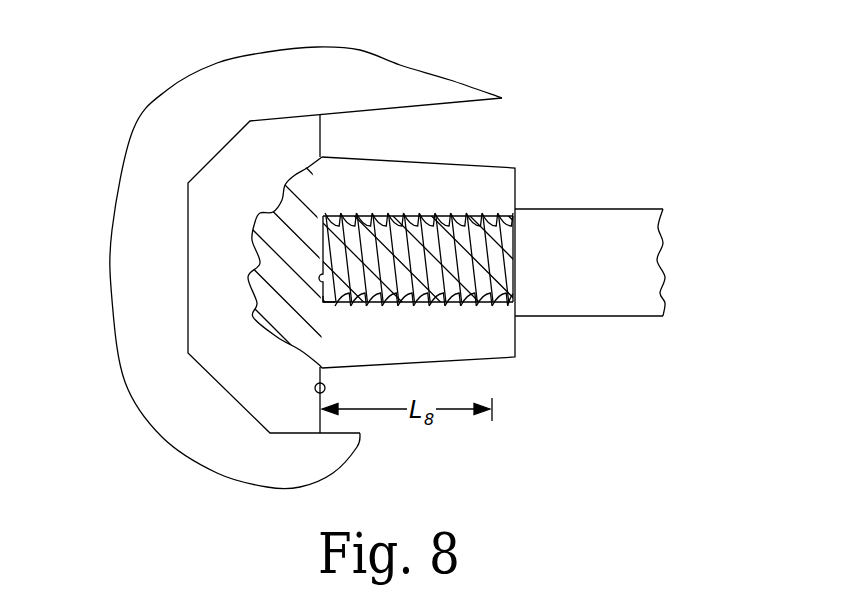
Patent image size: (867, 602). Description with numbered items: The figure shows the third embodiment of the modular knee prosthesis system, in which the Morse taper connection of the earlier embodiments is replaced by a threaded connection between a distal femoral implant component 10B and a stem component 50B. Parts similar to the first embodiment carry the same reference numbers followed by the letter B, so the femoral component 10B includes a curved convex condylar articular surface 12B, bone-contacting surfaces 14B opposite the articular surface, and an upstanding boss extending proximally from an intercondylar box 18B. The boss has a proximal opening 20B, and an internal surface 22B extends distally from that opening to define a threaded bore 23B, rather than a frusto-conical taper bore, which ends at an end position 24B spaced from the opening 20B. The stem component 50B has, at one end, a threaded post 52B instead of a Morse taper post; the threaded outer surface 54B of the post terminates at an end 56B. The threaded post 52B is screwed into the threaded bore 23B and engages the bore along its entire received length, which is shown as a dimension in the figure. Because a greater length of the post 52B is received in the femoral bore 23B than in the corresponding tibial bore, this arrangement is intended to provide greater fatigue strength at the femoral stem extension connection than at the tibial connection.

The distal femoral implant component 10B is at (291, 265).
The distal curved convex condylar articular surface 12B is at (130, 398).
The bone-contacting surfaces 14B is at (188, 215).
The intercondylar box 18B is at (315, 388).
The proximal opening 20B is at (517, 208).
The internal surface 22B is at (418, 212).
The threaded bore 23B is at (433, 227).
The end position 24B is at (327, 302).
The end position of post 56B is at (327, 245).
The stem component 50B is at (586, 291).
The threaded post 52B is at (500, 258).
The outer surface of post 54B is at (589, 283).